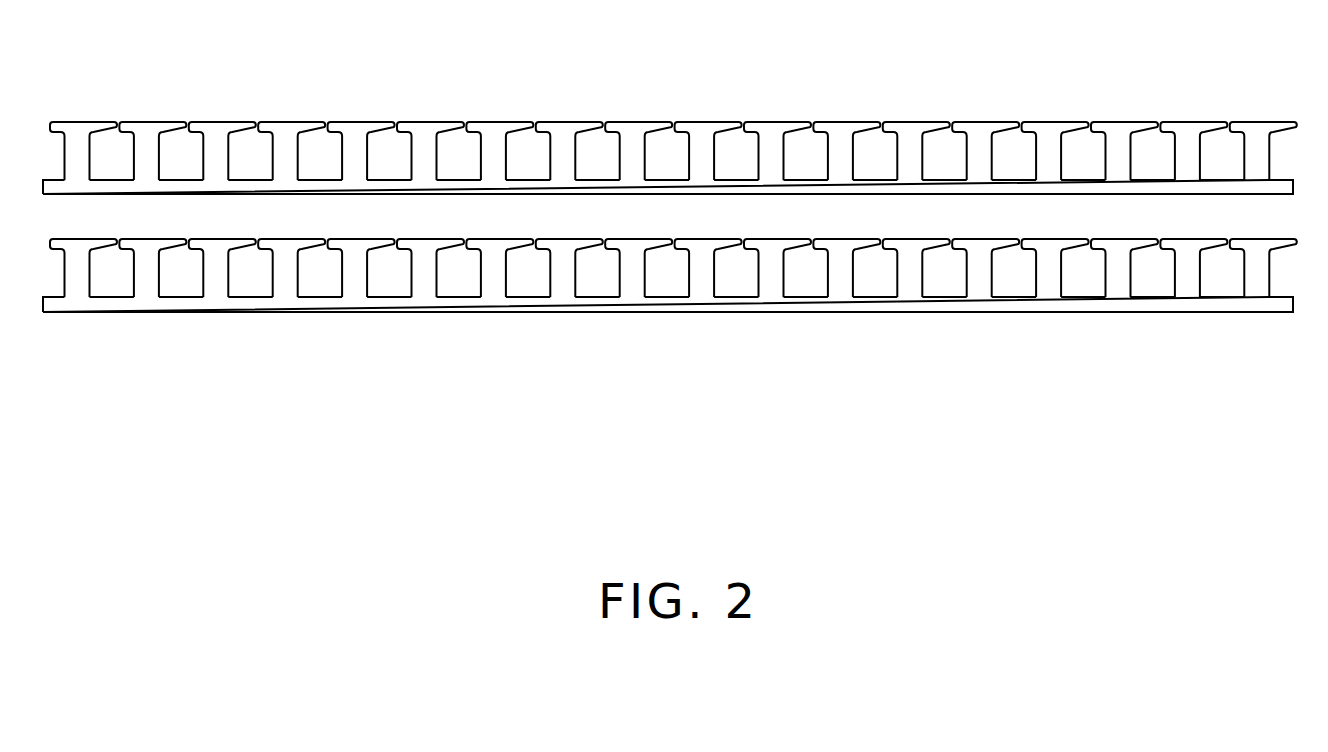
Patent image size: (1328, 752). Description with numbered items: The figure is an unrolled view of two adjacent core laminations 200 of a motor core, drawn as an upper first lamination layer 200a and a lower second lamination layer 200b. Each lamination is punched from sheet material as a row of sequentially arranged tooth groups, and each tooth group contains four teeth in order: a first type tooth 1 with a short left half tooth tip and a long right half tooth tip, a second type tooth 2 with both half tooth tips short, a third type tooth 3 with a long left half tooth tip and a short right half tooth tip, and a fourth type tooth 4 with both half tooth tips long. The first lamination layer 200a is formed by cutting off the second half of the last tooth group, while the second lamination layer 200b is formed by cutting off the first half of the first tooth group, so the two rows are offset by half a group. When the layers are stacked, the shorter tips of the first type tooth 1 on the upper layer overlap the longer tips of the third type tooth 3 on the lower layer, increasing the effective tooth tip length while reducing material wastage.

The core lamination 200 is at (670, 198).
The first lamination layer 200a is at (596, 70).
The second lamination layer 200b is at (587, 325).
The first type tooth 1 is at (1059, 282).
The second type tooth 2 is at (1128, 282).
The third type tooth 3 is at (1197, 282).
The fourth type tooth 4 is at (1267, 282).